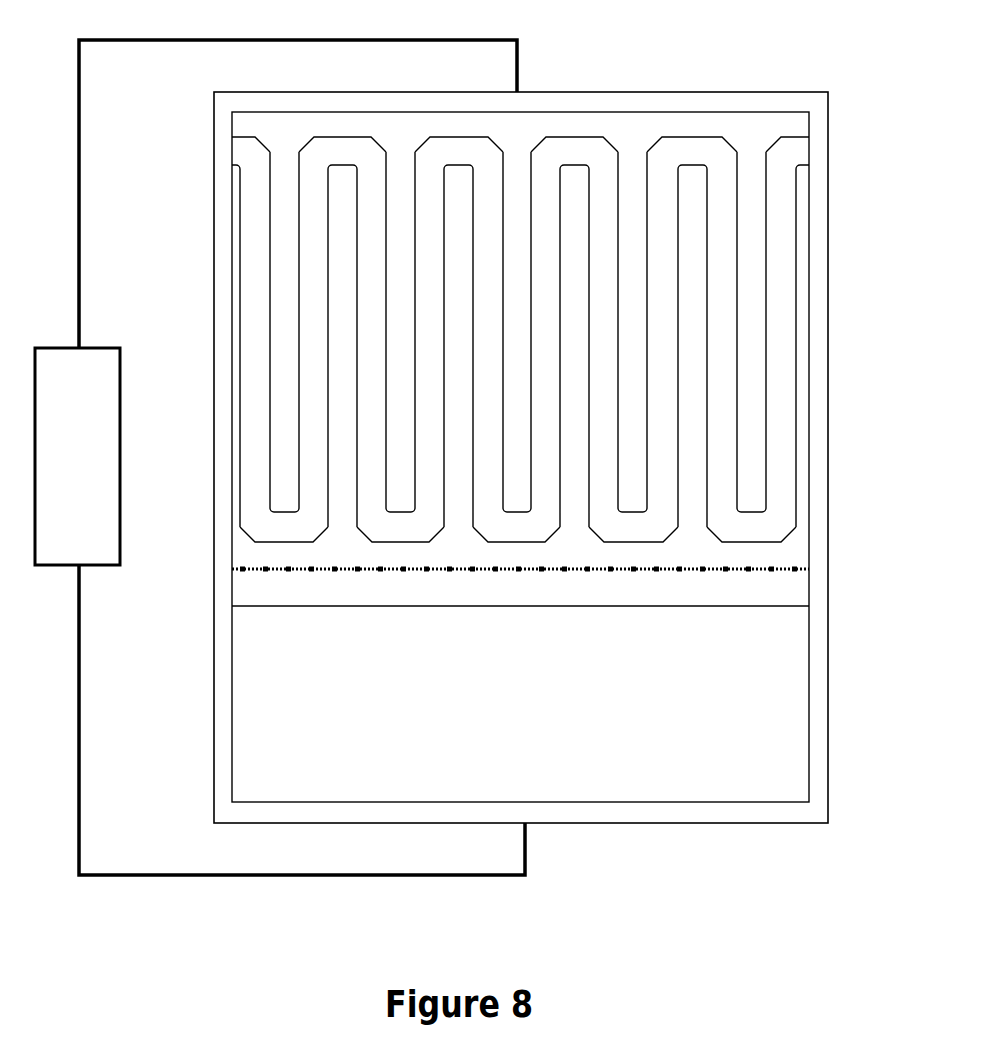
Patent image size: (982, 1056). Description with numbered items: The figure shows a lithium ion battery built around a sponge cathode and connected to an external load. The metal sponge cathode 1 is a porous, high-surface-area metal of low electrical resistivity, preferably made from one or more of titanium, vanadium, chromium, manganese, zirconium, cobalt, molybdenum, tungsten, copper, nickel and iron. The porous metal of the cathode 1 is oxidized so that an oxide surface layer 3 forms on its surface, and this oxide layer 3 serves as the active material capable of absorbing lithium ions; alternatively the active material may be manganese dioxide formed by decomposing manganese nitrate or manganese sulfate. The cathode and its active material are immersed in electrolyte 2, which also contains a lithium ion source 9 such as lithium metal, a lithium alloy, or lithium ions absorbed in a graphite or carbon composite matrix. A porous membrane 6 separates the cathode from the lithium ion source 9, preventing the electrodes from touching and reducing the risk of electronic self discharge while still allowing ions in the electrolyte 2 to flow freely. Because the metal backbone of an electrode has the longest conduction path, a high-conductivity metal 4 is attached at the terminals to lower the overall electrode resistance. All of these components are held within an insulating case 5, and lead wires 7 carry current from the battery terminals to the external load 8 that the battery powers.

The metal sponge cathode 1 is at (752, 206).
The electrolyte 2 is at (790, 554).
The oxide surface layer 3 is at (780, 322).
The high-conductivity metal 4 is at (683, 92).
The insulating case 5 is at (818, 659).
The porous membrane 6 is at (809, 569).
The lead wires 7 is at (105, 878).
The load 8 is at (42, 342).
The lithium ion source 9 is at (780, 721).